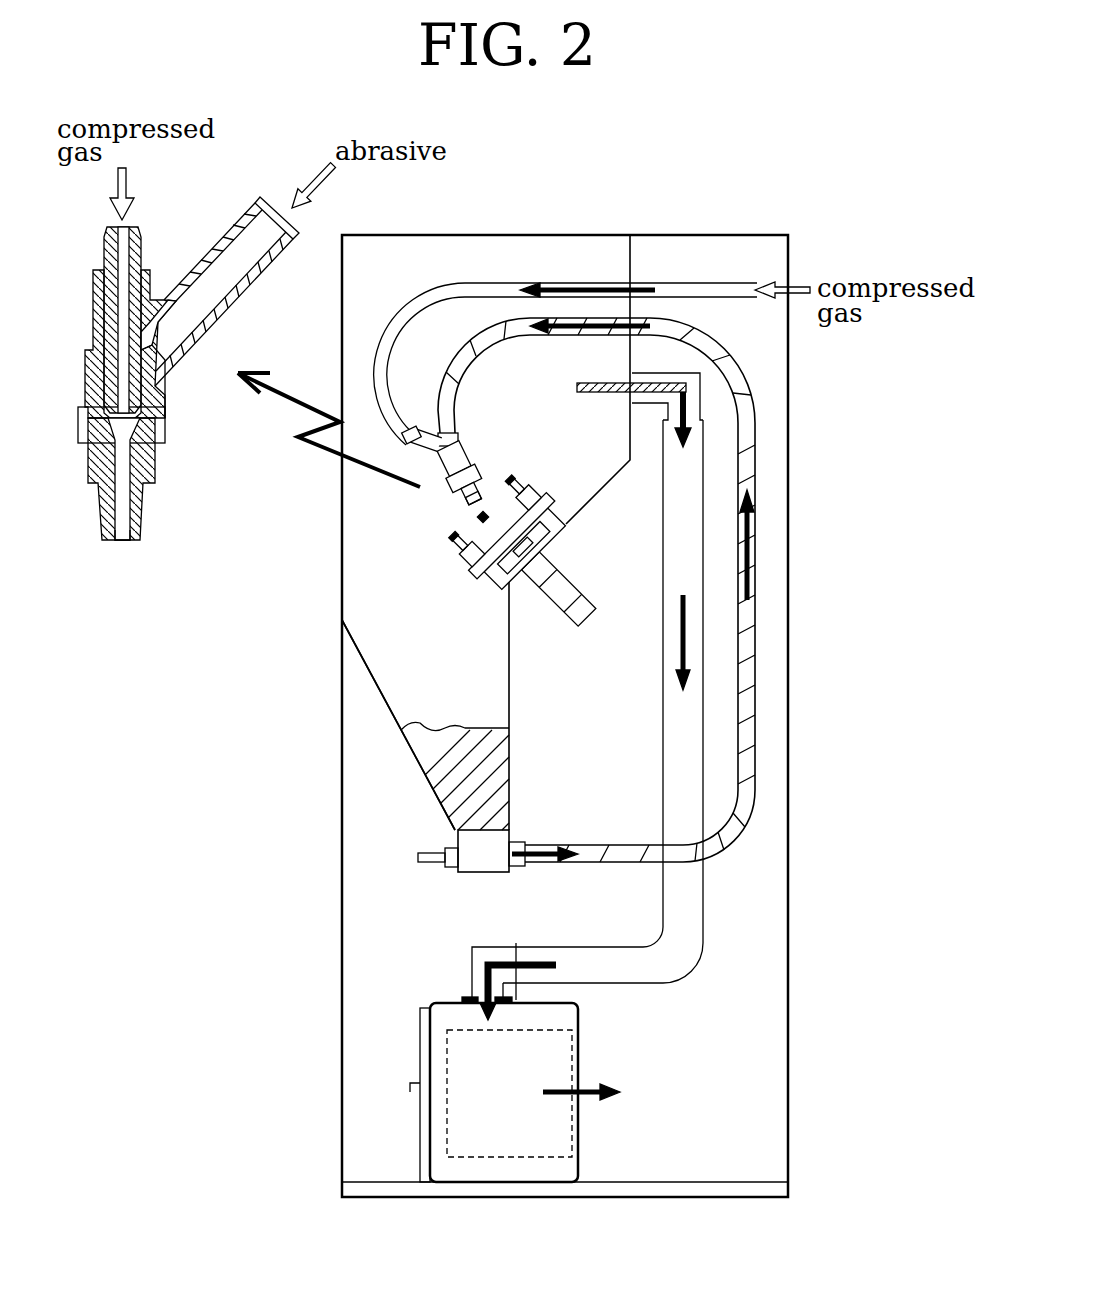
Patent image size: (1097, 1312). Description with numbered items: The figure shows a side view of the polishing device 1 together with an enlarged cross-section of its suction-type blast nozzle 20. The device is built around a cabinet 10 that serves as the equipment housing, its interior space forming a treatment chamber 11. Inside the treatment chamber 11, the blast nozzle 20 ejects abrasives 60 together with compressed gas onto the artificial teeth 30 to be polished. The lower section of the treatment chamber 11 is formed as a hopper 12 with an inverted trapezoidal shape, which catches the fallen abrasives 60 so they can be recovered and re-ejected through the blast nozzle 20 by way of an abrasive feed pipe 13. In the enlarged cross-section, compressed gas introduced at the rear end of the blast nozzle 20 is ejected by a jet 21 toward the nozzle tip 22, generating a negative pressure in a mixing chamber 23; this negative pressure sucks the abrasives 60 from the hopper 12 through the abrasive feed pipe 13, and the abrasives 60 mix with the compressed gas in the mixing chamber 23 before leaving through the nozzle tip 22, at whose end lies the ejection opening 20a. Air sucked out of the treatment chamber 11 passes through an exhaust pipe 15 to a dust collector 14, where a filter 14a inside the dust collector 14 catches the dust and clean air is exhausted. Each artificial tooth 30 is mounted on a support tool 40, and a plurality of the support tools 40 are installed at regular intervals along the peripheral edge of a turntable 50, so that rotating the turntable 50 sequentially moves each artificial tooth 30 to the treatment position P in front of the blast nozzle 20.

The polishing device 1 is at (601, 187).
The cabinet 10 is at (789, 392).
The treatment chamber 11 is at (385, 605).
The hopper 12 is at (438, 774).
The abrasive feed pipe 13 is at (757, 497).
The dust collector 14 is at (578, 1063).
The filter 14a is at (537, 1030).
The exhaust pipe 15 is at (665, 712).
The blast nozzle 20 is at (457, 457).
The nozzle tip / ejection port 20a is at (140, 543).
The jet 21 is at (161, 305).
The nozzle tip 22 is at (147, 494).
The mixing chamber 23 is at (172, 352).
The artificial tooth 30 is at (510, 488).
The support tool 40 is at (527, 498).
The turntable 50 is at (470, 572).
The abrasives 60 is at (457, 743).
The treatment position P is at (470, 517).